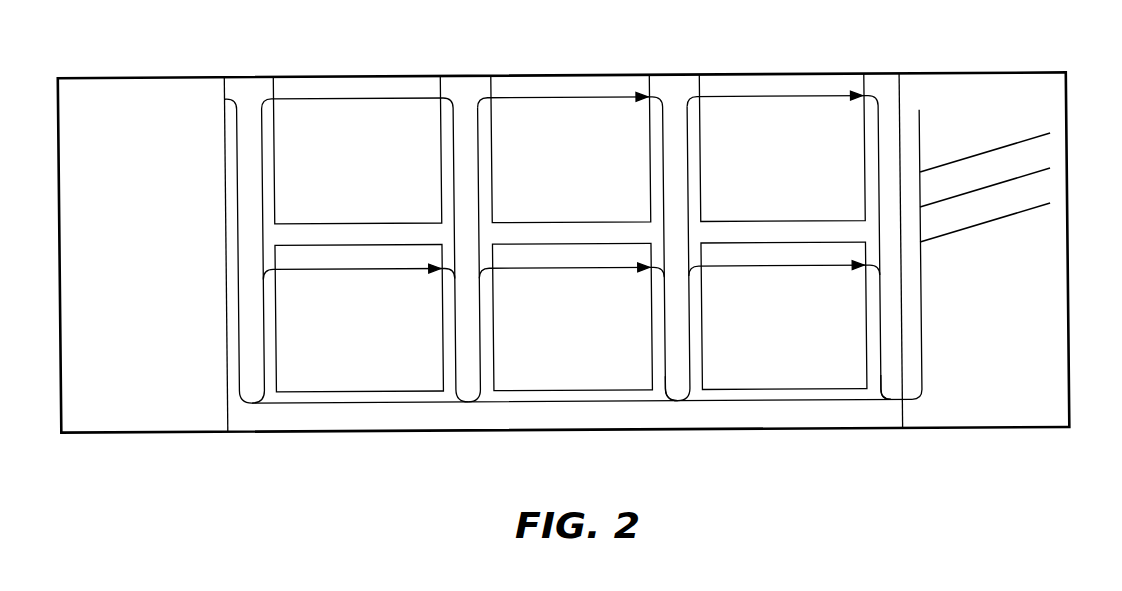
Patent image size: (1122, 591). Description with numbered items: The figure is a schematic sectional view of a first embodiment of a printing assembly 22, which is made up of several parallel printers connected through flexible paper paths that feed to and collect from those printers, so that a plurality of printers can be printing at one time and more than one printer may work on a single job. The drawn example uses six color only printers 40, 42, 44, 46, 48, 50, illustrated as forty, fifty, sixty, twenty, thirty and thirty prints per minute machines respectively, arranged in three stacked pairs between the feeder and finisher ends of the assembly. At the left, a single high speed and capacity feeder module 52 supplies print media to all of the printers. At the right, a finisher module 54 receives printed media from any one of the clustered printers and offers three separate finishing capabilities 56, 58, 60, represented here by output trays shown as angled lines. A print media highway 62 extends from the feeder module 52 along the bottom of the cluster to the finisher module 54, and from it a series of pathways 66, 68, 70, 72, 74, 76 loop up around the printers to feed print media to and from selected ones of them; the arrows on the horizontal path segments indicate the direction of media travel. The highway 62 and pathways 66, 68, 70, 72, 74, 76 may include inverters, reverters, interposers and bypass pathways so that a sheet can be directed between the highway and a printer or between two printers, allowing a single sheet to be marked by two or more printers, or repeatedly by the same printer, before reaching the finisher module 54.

The printing assembly 22 is at (836, 53).
The color only printer 40 is at (519, 100).
The color only printer 42 is at (287, 104).
The color only printer 44 is at (316, 394).
The color only printer 46 is at (552, 393).
The color only printer 48 is at (734, 101).
The color only printer 50 is at (758, 392).
The high speed and capacity feeder module 52 is at (138, 424).
The finisher module 54 is at (994, 423).
The finishing capability 56 is at (1032, 144).
The finishing capability 58 is at (1031, 179).
The finishing capability 60 is at (1031, 214).
The print media highway 62 is at (368, 405).
The pathway 66 is at (258, 382).
The pathway 68 is at (453, 378).
The pathway 70 is at (476, 151).
The pathway 72 is at (661, 376).
The pathway 74 is at (686, 144).
The pathway 76 is at (879, 375).